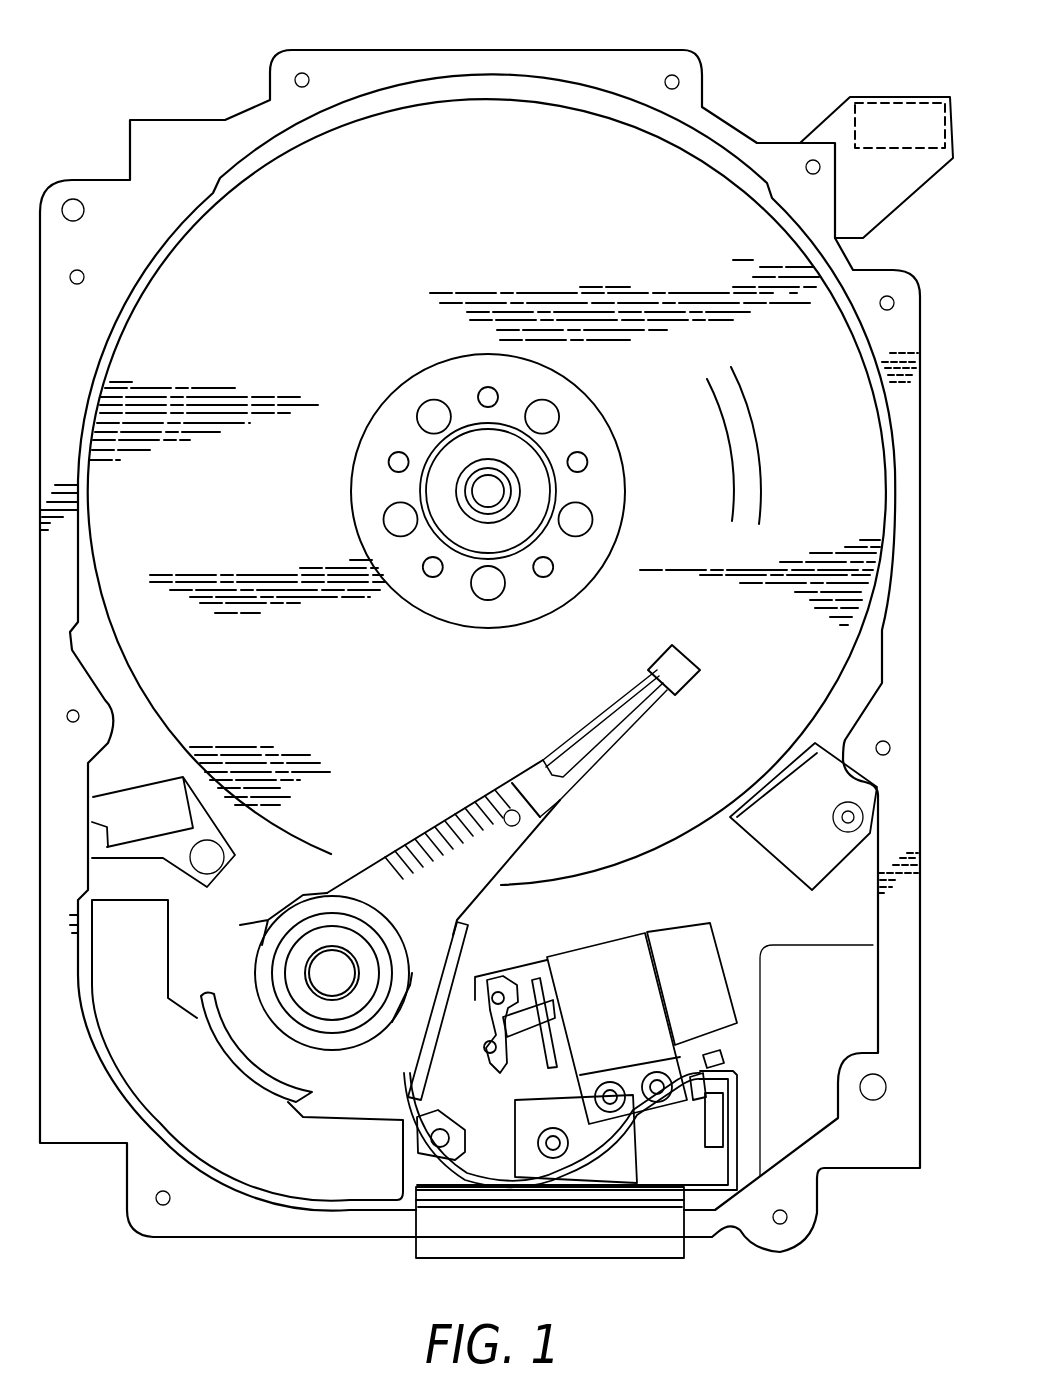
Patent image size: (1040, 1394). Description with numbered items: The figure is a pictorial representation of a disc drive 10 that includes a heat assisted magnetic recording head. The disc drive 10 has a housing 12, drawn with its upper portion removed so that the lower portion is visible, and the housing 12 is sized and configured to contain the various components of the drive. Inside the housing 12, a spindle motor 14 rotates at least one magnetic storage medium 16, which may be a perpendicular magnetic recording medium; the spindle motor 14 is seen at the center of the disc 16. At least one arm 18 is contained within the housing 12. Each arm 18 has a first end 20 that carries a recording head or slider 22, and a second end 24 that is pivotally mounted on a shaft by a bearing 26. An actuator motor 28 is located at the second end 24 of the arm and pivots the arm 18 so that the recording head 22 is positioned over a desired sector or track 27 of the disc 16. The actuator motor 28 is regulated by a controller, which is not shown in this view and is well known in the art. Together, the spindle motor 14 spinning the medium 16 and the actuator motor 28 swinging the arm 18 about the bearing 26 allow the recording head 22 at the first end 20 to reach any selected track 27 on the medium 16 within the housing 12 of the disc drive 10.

The disc drive 10 is at (100, 100).
The housing 12 is at (646, 66).
The spindle motor 14 is at (482, 497).
The magnetic storage medium 16 is at (387, 252).
The arm 18 is at (470, 833).
The first end 20 is at (607, 702).
The recording head 22 is at (673, 668).
The second end 24 is at (363, 900).
The bearing 26 is at (322, 960).
The track 27 is at (745, 450).
The actuator motor 28 is at (205, 1113).